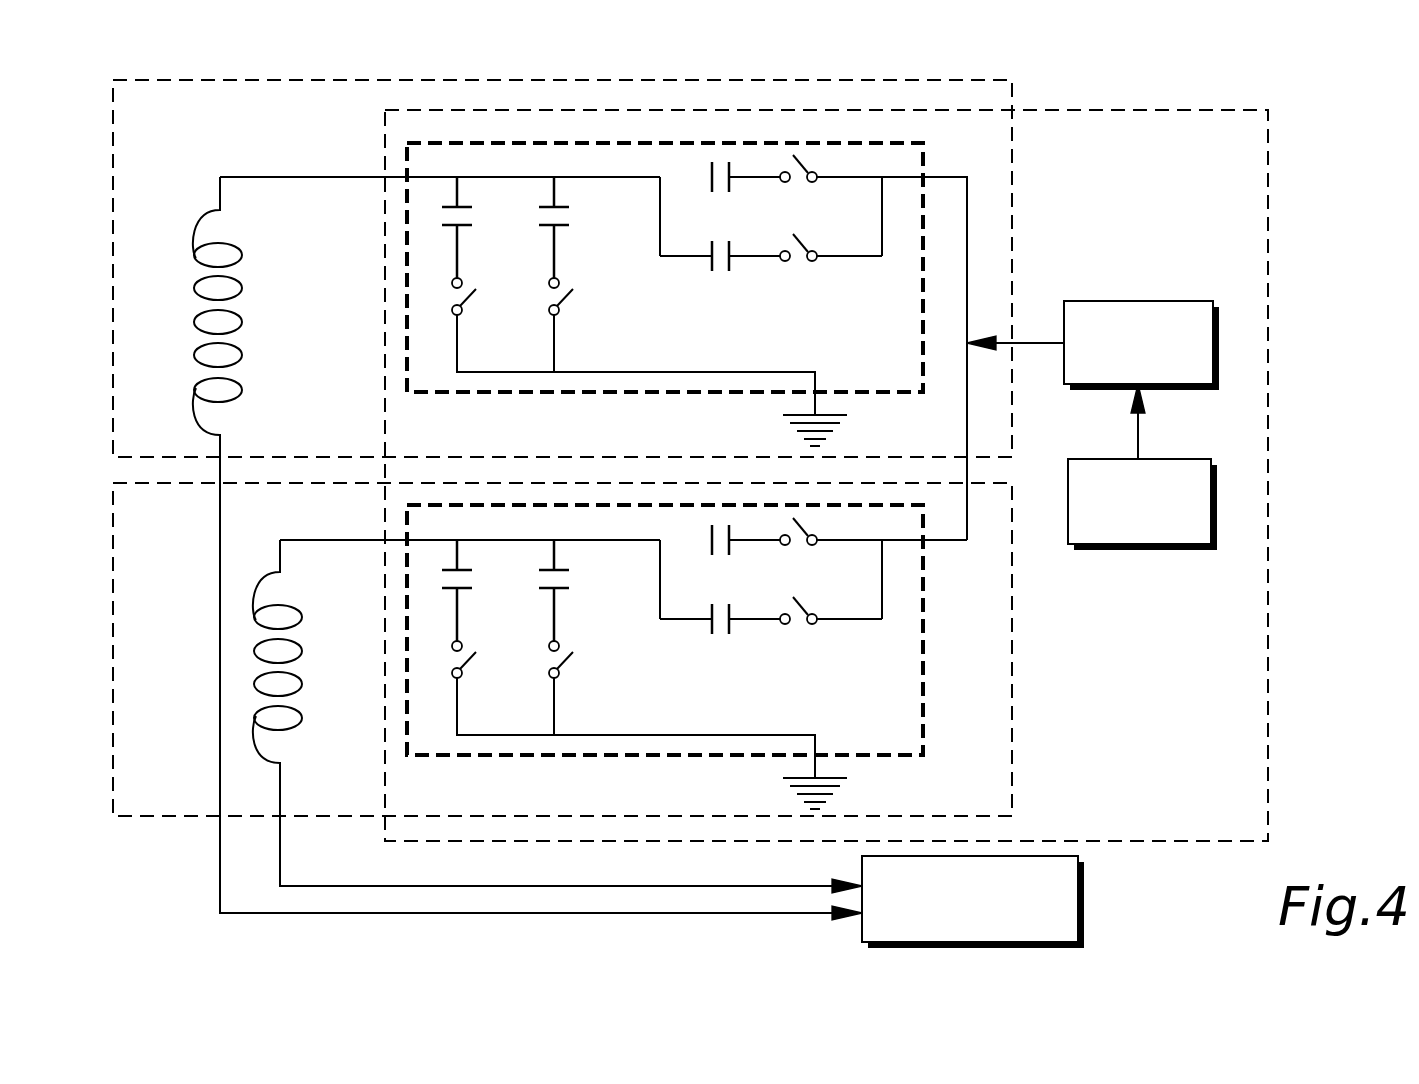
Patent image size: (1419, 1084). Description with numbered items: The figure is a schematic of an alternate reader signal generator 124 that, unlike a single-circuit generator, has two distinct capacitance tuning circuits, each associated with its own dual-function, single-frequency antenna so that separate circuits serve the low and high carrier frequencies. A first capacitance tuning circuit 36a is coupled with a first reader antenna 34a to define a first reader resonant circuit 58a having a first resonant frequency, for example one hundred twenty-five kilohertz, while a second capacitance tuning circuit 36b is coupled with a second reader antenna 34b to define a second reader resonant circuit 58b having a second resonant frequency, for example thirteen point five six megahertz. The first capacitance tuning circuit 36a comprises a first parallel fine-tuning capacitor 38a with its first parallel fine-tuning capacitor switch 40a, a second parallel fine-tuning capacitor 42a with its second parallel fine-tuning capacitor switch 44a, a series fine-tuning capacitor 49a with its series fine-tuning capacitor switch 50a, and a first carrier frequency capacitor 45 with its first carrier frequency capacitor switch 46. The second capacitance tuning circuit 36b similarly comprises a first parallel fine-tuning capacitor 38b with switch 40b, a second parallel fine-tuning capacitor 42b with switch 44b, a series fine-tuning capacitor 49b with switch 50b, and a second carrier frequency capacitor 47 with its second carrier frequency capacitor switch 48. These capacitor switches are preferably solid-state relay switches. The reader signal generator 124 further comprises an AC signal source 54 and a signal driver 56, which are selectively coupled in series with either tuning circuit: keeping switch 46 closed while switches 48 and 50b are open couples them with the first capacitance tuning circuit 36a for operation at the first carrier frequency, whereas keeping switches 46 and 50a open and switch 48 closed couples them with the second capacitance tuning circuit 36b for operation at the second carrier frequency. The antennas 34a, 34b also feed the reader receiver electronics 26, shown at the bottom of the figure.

The reader signal generator 124 is at (385, 392).
The second reader resonant circuit 58b is at (115, 182).
The first reader resonant circuit 58a is at (115, 650).
The second capacitance tuning circuit 36b is at (407, 298).
The first capacitance tuning circuit 36a is at (407, 672).
The second reader antenna 34b is at (232, 245).
The first reader antenna 34a is at (292, 608).
The first parallel fine-tuning capacitor 38b is at (460, 228).
The first parallel fine-tuning capacitor 38a is at (460, 591).
The first parallel fine-tuning capacitor switch 40b is at (476, 292).
The first parallel fine-tuning capacitor switch 40a is at (476, 655).
The second parallel fine-tuning capacitor 42b is at (557, 228).
The second parallel fine-tuning capacitor 42a is at (557, 591).
The second parallel fine-tuning capacitor switch 44b is at (573, 292).
The second parallel fine-tuning capacitor switch 44a is at (573, 655).
The series fine-tuning capacitor 49b is at (716, 190).
The series fine-tuning capacitor 49a is at (716, 553).
The series fine-tuning capacitor switch 50b is at (797, 183).
The series fine-tuning capacitor switch 50a is at (797, 546).
The second carrier frequency capacitor 47 is at (716, 268).
The second carrier frequency capacitor switch 48 is at (797, 262).
The first carrier frequency capacitor 45 is at (716, 631).
The first carrier frequency capacitor switch 46 is at (797, 625).
The signal driver 56 is at (1193, 301).
The AC signal source 54 is at (1193, 461).
The reader receiver electronics 26 is at (1070, 920).